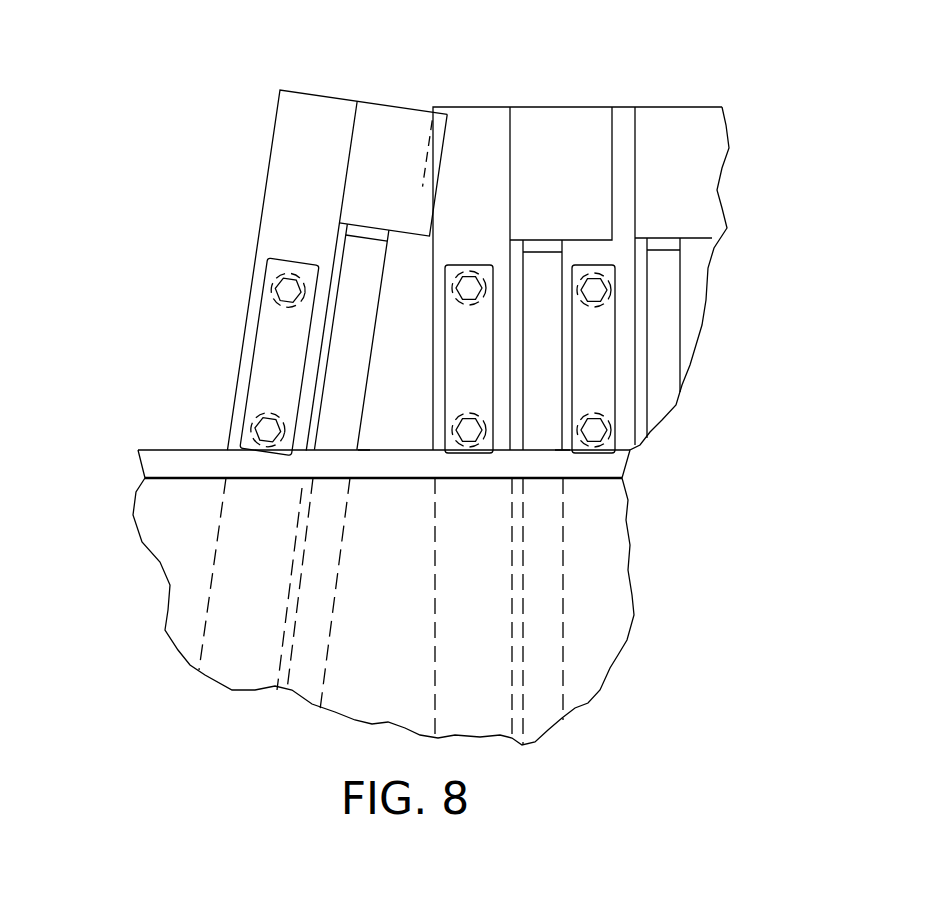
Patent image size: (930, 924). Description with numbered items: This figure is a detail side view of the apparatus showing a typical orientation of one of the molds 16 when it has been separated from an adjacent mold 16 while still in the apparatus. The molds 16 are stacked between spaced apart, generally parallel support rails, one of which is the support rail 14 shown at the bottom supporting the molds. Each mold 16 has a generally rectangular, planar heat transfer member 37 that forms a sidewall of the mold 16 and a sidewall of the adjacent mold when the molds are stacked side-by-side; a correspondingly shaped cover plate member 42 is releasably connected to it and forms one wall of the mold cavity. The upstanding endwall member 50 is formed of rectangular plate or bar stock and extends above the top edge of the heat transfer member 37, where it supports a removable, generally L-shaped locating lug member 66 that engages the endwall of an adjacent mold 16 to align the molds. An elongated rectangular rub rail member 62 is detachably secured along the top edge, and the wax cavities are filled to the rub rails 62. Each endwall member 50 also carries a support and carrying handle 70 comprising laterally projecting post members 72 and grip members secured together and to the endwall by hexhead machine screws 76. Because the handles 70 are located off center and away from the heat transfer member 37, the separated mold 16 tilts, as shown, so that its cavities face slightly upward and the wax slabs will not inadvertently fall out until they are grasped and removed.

The support rail 14 is at (143, 478).
The mold 16 is at (264, 111).
The heat transfer member 37 is at (362, 438).
The cover plate member 42 is at (333, 350).
The endwall member 50 is at (282, 197).
The rub rail member 62 is at (368, 230).
The locating lug member 66 is at (385, 103).
The support and carrying handle 70 is at (250, 338).
The post member 72 is at (247, 413).
The hexhead machine screw 76 is at (286, 290).